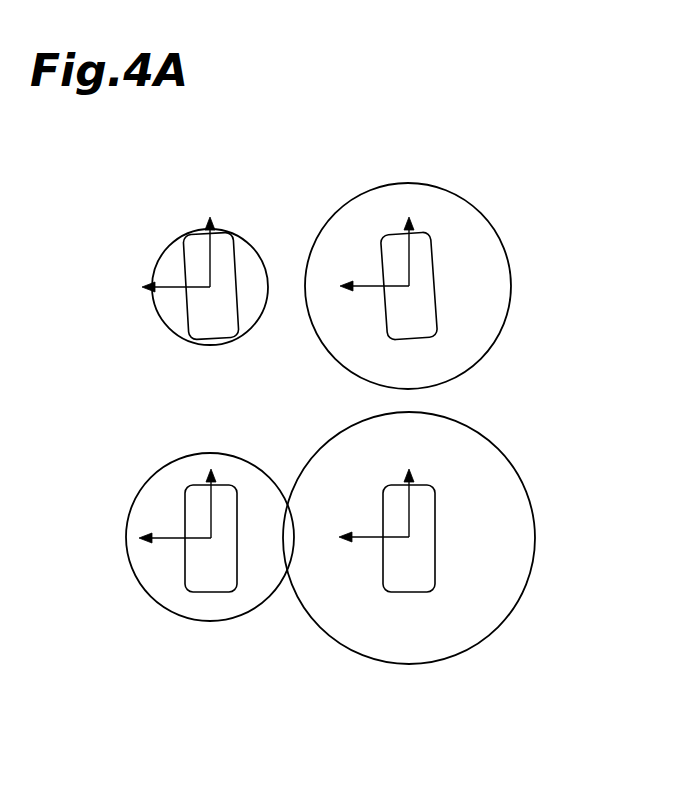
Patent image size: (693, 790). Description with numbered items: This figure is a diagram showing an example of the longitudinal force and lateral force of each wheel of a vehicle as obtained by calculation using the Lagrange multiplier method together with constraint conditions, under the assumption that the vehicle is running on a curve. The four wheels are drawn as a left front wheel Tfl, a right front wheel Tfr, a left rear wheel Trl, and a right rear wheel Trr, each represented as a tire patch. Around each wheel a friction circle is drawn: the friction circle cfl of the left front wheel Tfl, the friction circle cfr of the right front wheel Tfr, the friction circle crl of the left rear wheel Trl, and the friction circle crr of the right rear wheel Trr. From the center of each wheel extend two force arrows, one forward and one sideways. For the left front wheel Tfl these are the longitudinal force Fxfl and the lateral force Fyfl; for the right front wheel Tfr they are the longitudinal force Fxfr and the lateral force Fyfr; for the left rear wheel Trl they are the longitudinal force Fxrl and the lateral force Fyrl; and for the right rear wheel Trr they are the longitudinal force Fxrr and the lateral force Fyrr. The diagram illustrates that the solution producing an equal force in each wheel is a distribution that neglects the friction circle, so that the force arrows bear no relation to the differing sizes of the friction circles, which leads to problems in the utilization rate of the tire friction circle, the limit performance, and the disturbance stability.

The friction circle of the left front wheel cfl is at (160, 313).
The left front wheel Tfl is at (182, 257).
The longitudinal force of the left front wheel Fxfl is at (213, 221).
The lateral force of the left front wheel Fyfl is at (147, 284).
The friction circle of the right front wheel cfr is at (512, 292).
The right front wheel Tfr is at (433, 245).
The longitudinal force of the right front wheel Fxfr is at (411, 218).
The lateral force of the right front wheel Fyfr is at (344, 284).
The friction circle of the left rear wheel crl is at (142, 588).
The left rear wheel Trl is at (185, 498).
The longitudinal force of the left rear wheel Fxrl is at (216, 471).
The lateral force of the left rear wheel Fyrl is at (142, 537).
The friction circle of the right rear wheel crr is at (527, 582).
The right rear wheel Trr is at (435, 513).
The longitudinal force of the right rear wheel Fxrr is at (410, 474).
The lateral force of the right rear wheel Fyrr is at (350, 545).